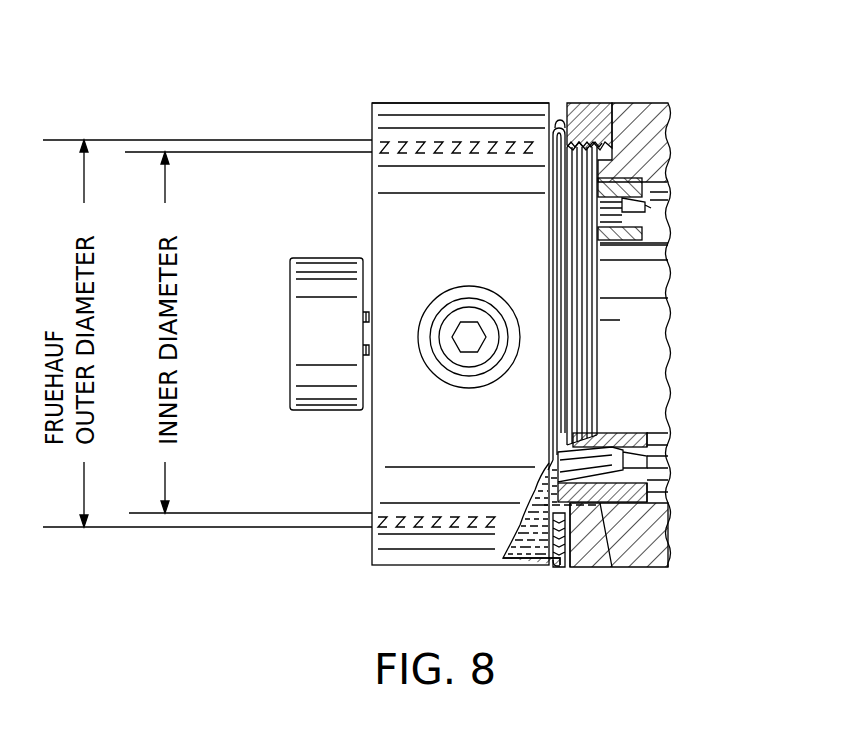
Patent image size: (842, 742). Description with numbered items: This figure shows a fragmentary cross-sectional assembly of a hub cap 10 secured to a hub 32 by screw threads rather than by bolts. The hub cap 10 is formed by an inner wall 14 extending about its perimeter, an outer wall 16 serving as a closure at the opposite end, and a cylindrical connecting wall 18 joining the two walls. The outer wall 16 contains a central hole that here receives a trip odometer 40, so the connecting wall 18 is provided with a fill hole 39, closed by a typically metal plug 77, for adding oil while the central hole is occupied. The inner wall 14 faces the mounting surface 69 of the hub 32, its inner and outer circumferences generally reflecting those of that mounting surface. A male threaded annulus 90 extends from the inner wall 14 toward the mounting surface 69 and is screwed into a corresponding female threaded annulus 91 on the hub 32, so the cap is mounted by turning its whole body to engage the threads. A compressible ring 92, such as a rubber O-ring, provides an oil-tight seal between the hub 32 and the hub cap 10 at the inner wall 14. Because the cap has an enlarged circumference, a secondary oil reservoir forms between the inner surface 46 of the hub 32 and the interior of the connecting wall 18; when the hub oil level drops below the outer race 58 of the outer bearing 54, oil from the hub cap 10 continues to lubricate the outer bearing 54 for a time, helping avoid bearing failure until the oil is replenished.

The hub cap 10 is at (428, 99).
The inner wall 14 is at (556, 122).
The outer wall 16 is at (372, 205).
The connecting wall 18 is at (474, 102).
The hub 32 is at (642, 100).
The fill hole 39 is at (458, 300).
The trip odometer 40 is at (289, 339).
The inner surface of hub 46 is at (670, 490).
The outer bearing 54 is at (628, 433).
The outer race 58 is at (600, 548).
The mounting surface 69 is at (561, 570).
The plug 77 is at (470, 360).
The male threaded annulus 90 is at (588, 290).
The female threaded annulus 91 is at (604, 148).
The compressible ring 92 is at (566, 120).